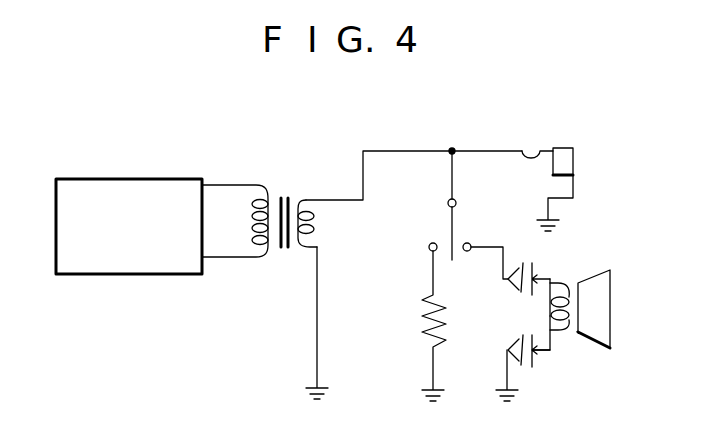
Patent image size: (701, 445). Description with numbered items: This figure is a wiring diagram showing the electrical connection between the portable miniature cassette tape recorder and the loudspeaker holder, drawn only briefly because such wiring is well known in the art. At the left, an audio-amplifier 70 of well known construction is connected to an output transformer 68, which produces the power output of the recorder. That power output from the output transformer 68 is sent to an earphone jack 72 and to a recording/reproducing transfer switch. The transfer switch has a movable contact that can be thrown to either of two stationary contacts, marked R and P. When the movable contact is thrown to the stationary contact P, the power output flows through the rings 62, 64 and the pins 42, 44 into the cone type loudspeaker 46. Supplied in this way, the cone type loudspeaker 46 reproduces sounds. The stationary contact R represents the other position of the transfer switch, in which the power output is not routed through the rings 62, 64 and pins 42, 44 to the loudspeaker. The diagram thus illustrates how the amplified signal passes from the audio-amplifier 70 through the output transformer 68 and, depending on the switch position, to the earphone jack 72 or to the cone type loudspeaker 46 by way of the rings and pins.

The audio-amplifier 70 is at (155, 179).
The output transformer 68 is at (287, 192).
The earphone jack 72 is at (546, 148).
The ring 62 is at (508, 283).
The ring 64 is at (506, 342).
The pin 42 is at (544, 278).
The pin 44 is at (547, 351).
The cone type loudspeaker 46 is at (598, 334).
The stationary contact R is at (433, 310).
The stationary contact P is at (485, 248).